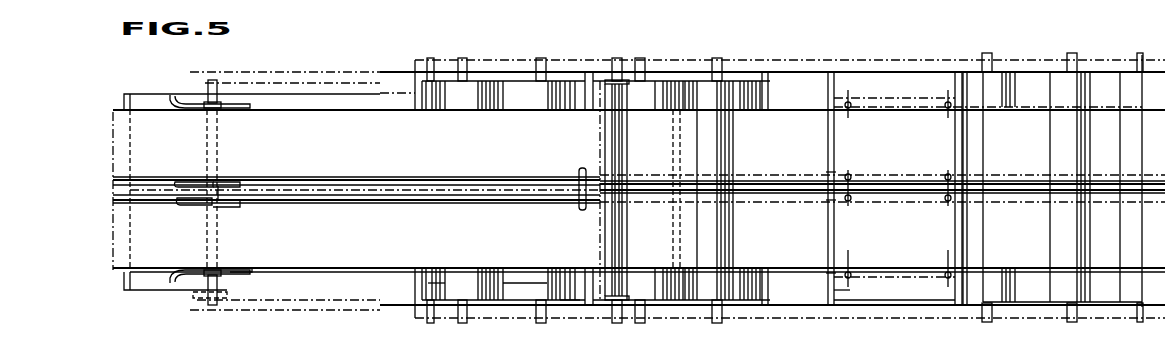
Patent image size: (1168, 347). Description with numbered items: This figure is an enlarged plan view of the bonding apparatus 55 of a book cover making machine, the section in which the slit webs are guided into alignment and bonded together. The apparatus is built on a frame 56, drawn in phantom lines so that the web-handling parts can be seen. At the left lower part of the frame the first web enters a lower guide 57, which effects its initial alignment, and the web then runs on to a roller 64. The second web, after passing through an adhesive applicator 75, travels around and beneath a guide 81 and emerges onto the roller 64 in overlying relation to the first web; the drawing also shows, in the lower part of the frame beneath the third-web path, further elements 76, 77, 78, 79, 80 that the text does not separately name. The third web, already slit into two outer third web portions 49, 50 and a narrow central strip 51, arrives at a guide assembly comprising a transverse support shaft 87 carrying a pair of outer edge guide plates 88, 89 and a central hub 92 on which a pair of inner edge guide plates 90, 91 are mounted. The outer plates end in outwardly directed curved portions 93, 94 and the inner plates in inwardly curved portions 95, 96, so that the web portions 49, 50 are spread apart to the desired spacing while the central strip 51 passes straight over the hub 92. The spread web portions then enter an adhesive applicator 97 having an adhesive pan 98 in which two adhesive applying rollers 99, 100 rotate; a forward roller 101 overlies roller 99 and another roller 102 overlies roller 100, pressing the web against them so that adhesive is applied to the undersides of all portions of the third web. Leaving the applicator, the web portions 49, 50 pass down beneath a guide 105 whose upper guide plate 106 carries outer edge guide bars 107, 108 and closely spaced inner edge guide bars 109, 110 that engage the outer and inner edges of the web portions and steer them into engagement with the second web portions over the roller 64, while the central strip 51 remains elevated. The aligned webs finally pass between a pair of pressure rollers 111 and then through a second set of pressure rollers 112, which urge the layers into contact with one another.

The third web portion 49 is at (313, 262).
The third web portion 50 is at (322, 120).
The central strip 51 is at (344, 193).
The bonding apparatus 55 is at (896, 53).
The frame 56 is at (880, 313).
The lower guide 57 is at (371, 292).
The roller 64 is at (1007, 302).
The adhesive applicator 75 is at (515, 67).
The lower housing 76 is at (508, 312).
The lower box 77 is at (480, 282).
The lower plate 78 is at (568, 310).
The lower bracket 79 is at (440, 285).
The lower box 80 is at (534, 278).
The guide 81 is at (812, 299).
The transverse support shaft 87 is at (212, 290).
The outer edge guide plate 88 is at (243, 274).
The outer edge guide plate 89 is at (249, 100).
The inner edge guide plate 90 is at (237, 207).
The inner edge guide plate 91 is at (229, 182).
The central hub 92 is at (222, 204).
The outwardly directed curved portion 93 is at (178, 276).
The outwardly directed curved portion 94 is at (172, 96).
The inwardly curved portion 95 is at (190, 206).
The inwardly curved portion 96 is at (180, 182).
The adhesive applicator 97 is at (663, 310).
The adhesive pan 98 is at (678, 80).
The adhesive applying roller 99 is at (647, 88).
The adhesive applying roller 100 is at (747, 88).
The forward roller 101 is at (612, 80).
The roller 102 is at (720, 92).
The guide 105 is at (869, 67).
The upper guide plate 106 is at (925, 82).
The outer edge guide bar 107 is at (827, 273).
The outer edge guide bar 108 is at (823, 102).
The inner edge guide bar 109 is at (824, 198).
The inner edge guide bar 110 is at (826, 175).
The pressure rollers 111 is at (1083, 302).
The second set of pressure rollers 112 is at (1133, 295).